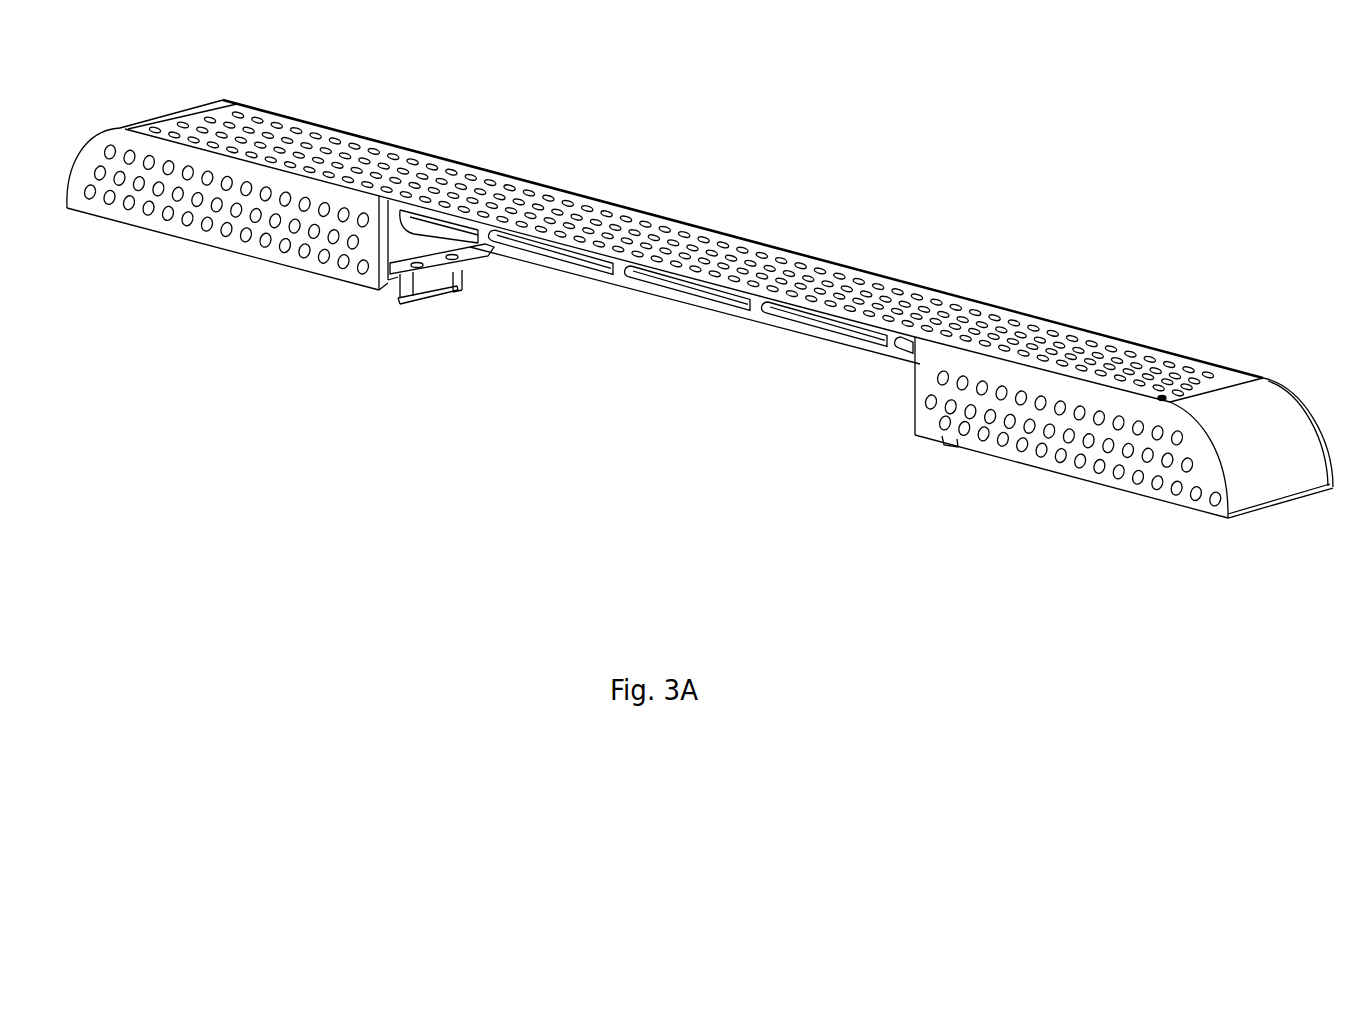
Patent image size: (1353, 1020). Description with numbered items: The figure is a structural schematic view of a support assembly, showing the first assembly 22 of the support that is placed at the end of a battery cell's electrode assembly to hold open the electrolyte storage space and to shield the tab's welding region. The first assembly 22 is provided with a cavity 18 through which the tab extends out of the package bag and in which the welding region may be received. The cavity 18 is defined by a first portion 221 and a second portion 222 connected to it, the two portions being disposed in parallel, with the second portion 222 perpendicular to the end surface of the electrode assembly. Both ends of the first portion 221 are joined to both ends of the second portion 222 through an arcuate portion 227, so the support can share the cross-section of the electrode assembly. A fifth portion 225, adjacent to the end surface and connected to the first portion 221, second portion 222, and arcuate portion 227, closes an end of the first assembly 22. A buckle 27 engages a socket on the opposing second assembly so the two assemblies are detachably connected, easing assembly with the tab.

The first assembly 22 is at (728, 187).
The cavity 18 is at (653, 325).
The first portion 221 is at (293, 142).
The second portion 222 is at (620, 278).
The fifth portion 225 is at (242, 223).
The arcuate portion 227 is at (1262, 458).
The buckle 27 is at (424, 273).